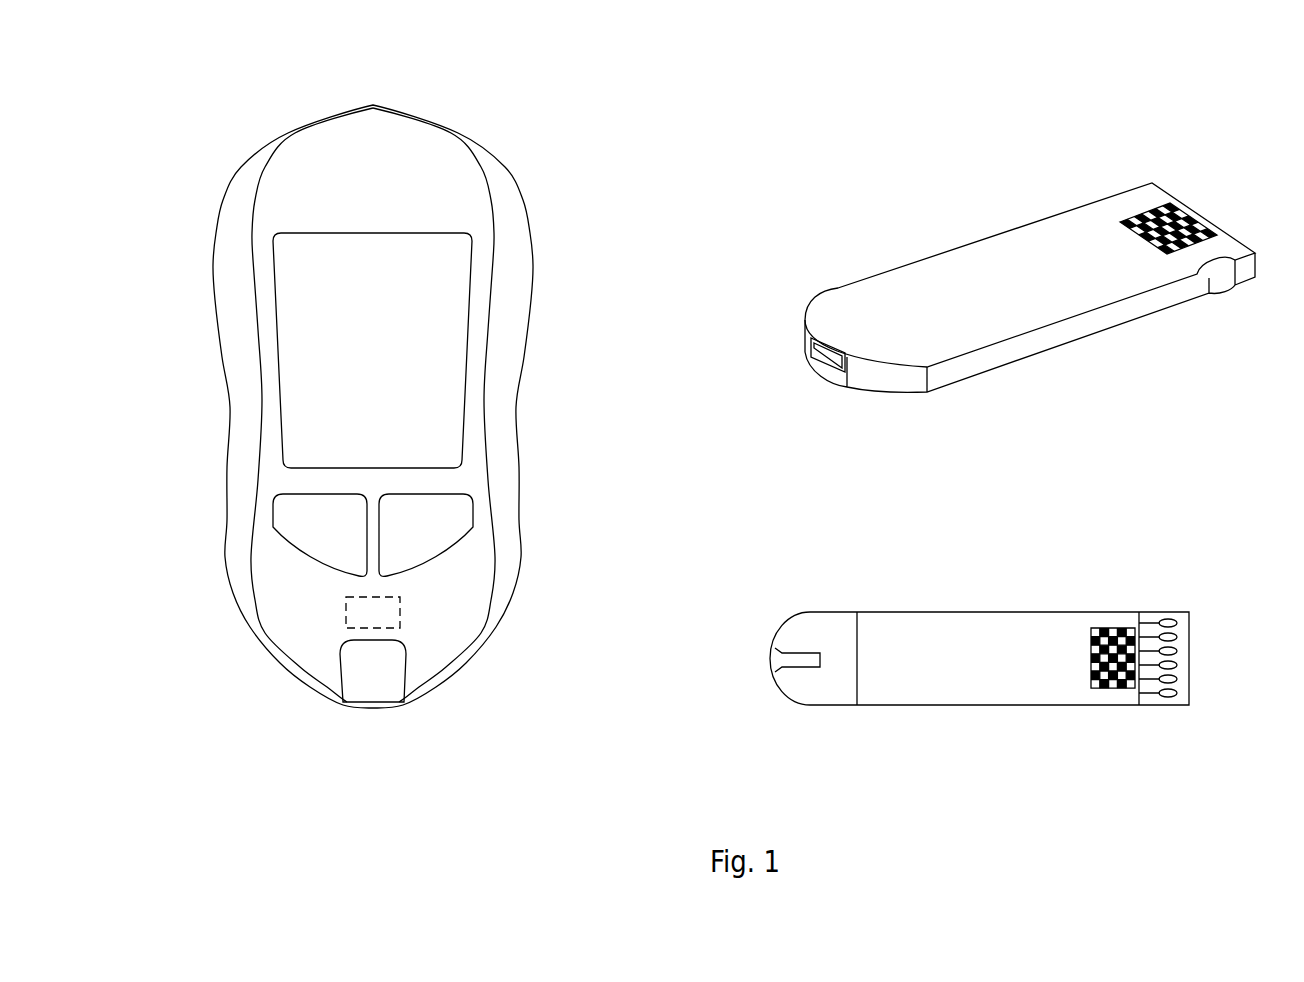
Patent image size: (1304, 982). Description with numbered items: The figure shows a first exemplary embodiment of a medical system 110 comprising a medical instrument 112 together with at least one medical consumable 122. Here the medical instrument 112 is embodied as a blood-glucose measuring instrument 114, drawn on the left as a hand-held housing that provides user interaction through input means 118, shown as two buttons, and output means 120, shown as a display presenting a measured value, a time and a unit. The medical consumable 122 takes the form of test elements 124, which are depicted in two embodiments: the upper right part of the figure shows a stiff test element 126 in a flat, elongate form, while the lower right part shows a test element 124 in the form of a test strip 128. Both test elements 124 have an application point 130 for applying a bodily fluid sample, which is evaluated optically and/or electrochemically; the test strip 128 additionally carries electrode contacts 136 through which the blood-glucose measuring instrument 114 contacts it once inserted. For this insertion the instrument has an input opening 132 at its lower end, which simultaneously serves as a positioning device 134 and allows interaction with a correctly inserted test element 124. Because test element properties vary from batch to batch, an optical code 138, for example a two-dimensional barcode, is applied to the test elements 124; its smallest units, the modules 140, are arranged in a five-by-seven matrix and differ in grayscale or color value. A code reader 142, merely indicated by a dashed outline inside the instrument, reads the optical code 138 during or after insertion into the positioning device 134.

The medical system 110 is at (803, 162).
The medical instrument 112 is at (454, 406).
The blood-glucose measuring instrument 114 is at (513, 292).
The input means 118 is at (343, 536).
The output means 120 is at (447, 382).
The medical consumable 122 is at (967, 462).
The test element 124 is at (1022, 600).
The stiff test element 126 is at (1030, 275).
The test strip 128 is at (979, 658).
The application point 130 is at (823, 357).
The input opening 132 is at (387, 731).
The positioning device 134 is at (373, 683).
The electrode contacts 136 is at (1183, 651).
The optical code 138 is at (1199, 210).
The modules 140 is at (1135, 213).
The code reader 142 is at (400, 608).